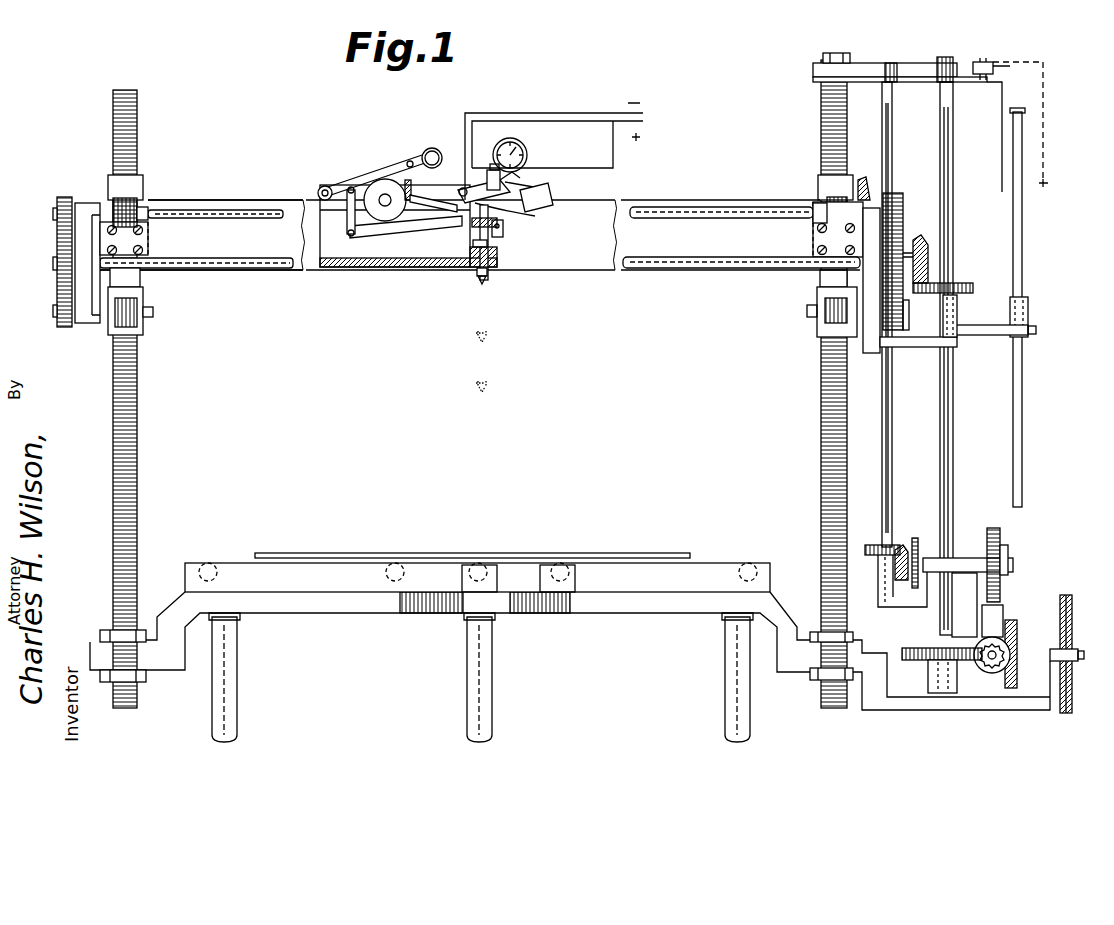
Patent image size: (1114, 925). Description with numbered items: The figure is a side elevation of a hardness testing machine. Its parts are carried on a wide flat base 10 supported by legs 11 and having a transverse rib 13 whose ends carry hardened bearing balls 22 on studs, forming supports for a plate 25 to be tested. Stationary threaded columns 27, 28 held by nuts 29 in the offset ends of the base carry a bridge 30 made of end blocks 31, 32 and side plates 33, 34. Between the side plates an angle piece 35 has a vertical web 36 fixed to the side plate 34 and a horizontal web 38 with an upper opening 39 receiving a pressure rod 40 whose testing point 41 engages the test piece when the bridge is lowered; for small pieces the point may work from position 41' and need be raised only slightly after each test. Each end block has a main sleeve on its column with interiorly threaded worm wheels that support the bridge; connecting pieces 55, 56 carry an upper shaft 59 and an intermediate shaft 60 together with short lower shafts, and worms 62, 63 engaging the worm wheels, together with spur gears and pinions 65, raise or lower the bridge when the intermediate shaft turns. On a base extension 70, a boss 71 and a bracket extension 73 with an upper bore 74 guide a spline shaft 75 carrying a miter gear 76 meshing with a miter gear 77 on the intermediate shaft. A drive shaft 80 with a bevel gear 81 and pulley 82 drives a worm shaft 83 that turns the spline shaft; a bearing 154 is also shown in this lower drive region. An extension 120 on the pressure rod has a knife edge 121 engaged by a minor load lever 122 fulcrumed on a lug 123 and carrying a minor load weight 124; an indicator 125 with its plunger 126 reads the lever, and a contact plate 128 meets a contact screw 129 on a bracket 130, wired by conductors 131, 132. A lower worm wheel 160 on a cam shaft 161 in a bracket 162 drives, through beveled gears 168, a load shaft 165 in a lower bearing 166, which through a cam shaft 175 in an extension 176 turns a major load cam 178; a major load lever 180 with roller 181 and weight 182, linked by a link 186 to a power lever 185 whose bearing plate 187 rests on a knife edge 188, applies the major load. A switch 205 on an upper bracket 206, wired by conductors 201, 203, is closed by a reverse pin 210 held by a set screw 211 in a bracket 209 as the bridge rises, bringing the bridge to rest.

The base 10 is at (665, 614).
The legs 11 is at (492, 702).
The transverse rib 13 is at (718, 563).
The hardened bearing balls 22 is at (757, 565).
The plate 25 is at (620, 553).
The elevating threaded column 27 is at (137, 510).
The elevating threaded column 28 is at (821, 406).
The nuts 29 is at (143, 630).
The bridge 30 is at (252, 203).
The end block 31 is at (88, 203).
The end block 32 is at (866, 177).
The side plate 33 is at (295, 206).
The side plate 34 is at (310, 198).
The angle piece 35 is at (318, 265).
The vertical web 36 is at (338, 270).
The horizontal web 38 is at (372, 268).
The upper opening 39 is at (497, 263).
The pressure rod 40 is at (490, 273).
The testing point 41 is at (458, 291).
The testing position of testing point 41' is at (454, 388).
The connecting piece 55 is at (85, 325).
The connecting piece 56 is at (873, 345).
The upper connecting shaft 59 is at (681, 212).
The intermediate connecting shaft 60 is at (665, 264).
The worm 62 is at (148, 210).
The worm 63 is at (145, 335).
The pinion 65 is at (58, 200).
The base extension 70 is at (1010, 711).
The boss 71 is at (955, 700).
The bracket extension 73 is at (915, 348).
The upper bore 74 is at (957, 316).
The spline shaft 75 is at (953, 428).
The miter gear 76 is at (973, 288).
The miter gear 77 is at (930, 252).
The drive shaft 80 is at (1080, 652).
The driving bevel gear 81 is at (1017, 626).
The pulley 82 is at (1066, 595).
The worm shaft 83 is at (992, 673).
The extension 120 is at (490, 229).
The knife edge 121 is at (504, 230).
The minor load lever 122 is at (522, 186).
The lug 123 is at (456, 208).
The minor load weight 124 is at (553, 192).
The indicator 125 is at (516, 146).
The plunger 126 is at (522, 176).
The contact plate 128 is at (521, 215).
The contact screw 129 is at (491, 168).
The bracket 130 is at (462, 185).
The conductor 131 is at (559, 99).
The conductor 132 is at (601, 121).
The bearing 154 is at (1004, 615).
The lower worm wheel 160 is at (997, 531).
The lower cam shaft 161 is at (1013, 565).
The bracket 162 is at (961, 573).
The load shaft 165 is at (892, 470).
The lower bearing 166 is at (878, 586).
The beveled gears 168 is at (904, 545).
The major load cam shaft 175 is at (388, 194).
The extension 176 is at (412, 192).
The major load cam 178 is at (410, 160).
The major load lever 180 is at (328, 186).
The roller 181 is at (374, 183).
The major load weight 182 is at (432, 148).
The power lever 185 is at (378, 229).
The link 186 is at (347, 222).
The knife edge bearing plate 187 is at (498, 252).
The knife edge 188 is at (472, 240).
The conductor 201 is at (1000, 102).
The conductor 203 is at (1043, 105).
The switch 205 is at (985, 60).
The upper bracket 206 is at (870, 63).
The bracket 209 is at (987, 336).
The reverse pin 210 is at (1022, 272).
The set screw 211 is at (1036, 333).